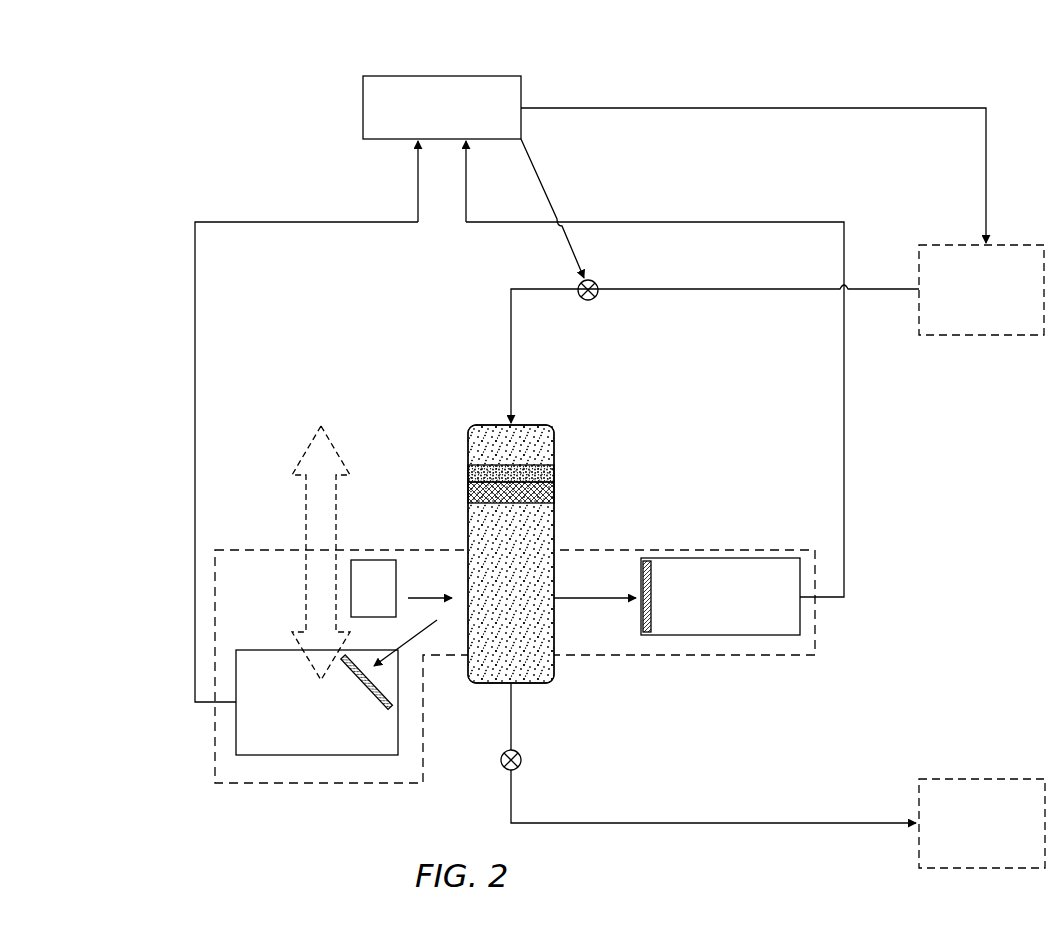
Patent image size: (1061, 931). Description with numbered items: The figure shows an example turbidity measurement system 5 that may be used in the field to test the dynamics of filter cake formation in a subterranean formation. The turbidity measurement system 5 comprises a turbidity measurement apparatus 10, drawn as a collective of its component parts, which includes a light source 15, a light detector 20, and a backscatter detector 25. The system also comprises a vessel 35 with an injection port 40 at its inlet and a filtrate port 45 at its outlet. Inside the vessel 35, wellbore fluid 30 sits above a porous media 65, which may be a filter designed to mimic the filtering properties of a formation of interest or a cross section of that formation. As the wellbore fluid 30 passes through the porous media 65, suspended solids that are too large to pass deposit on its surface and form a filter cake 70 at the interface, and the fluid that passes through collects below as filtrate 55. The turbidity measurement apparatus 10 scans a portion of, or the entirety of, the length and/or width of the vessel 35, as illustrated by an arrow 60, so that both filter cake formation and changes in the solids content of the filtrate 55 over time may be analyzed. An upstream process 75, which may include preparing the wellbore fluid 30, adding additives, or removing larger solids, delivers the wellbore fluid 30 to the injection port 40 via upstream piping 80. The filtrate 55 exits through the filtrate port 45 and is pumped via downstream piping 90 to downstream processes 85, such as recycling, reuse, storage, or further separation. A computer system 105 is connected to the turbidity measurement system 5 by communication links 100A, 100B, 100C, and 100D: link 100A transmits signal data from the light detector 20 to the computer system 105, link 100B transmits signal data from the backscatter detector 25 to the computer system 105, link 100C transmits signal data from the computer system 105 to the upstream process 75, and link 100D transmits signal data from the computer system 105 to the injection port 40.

The turbidity measurement system 5 is at (293, 358).
The turbidity measurement apparatus 10 is at (815, 612).
The light source 15 is at (376, 559).
The light detector 20 is at (734, 611).
The backscatter detector 25 is at (329, 729).
The wellbore fluid 30 is at (535, 450).
The vessel 35 is at (508, 540).
The injection port 40 is at (590, 300).
The filtrate port 45 is at (521, 758).
The filtrate 55 is at (532, 637).
The arrow 60 is at (306, 497).
The porous media 65 is at (554, 497).
The filter cake 70 is at (554, 477).
The upstream process 75 is at (993, 303).
The upstream piping 80 is at (735, 288).
The downstream processes 85 is at (993, 837).
The downstream piping 90 is at (718, 822).
The communication link 100A is at (844, 435).
The communication link 100B is at (195, 690).
The communication link 100C is at (843, 107).
The communication link 100D is at (545, 182).
The computer system 105 is at (460, 120).